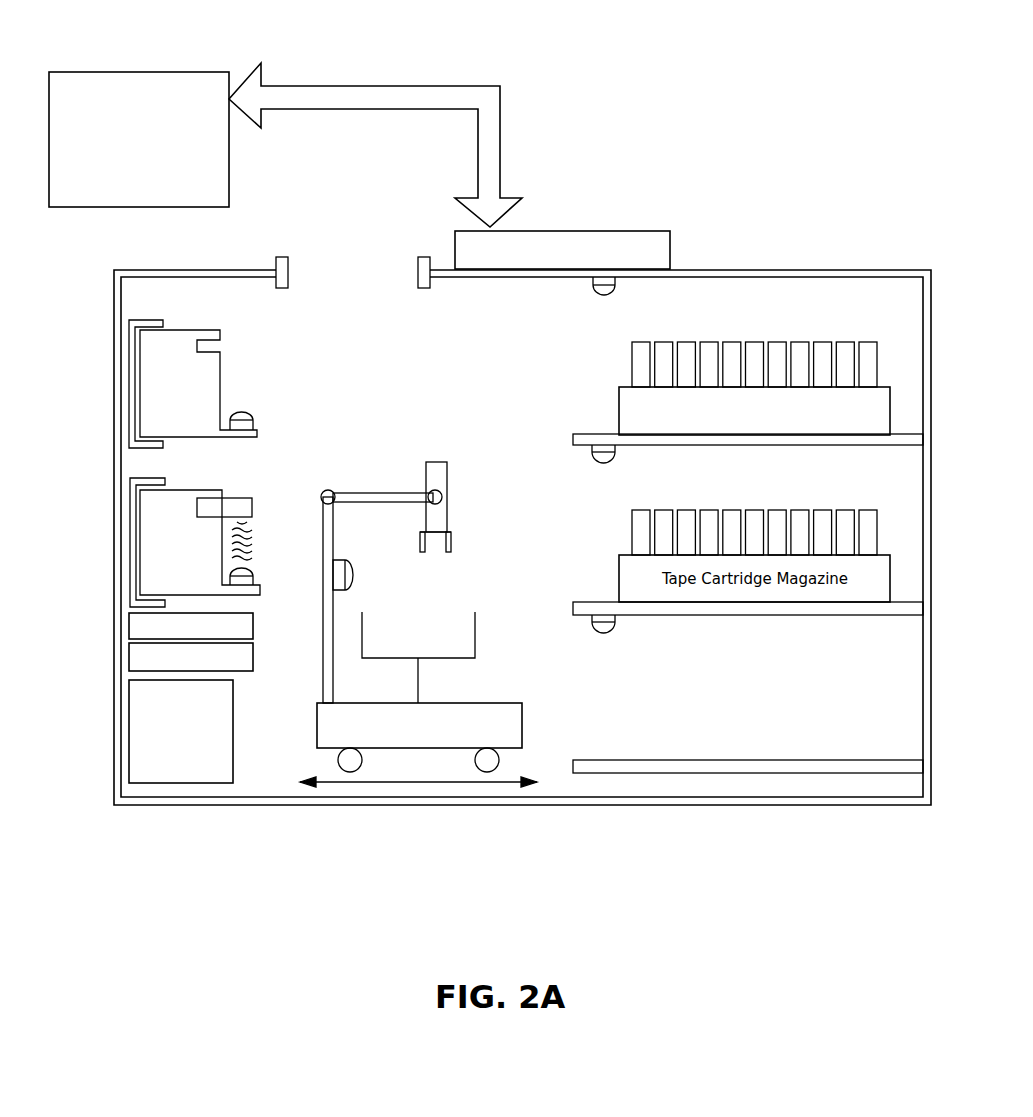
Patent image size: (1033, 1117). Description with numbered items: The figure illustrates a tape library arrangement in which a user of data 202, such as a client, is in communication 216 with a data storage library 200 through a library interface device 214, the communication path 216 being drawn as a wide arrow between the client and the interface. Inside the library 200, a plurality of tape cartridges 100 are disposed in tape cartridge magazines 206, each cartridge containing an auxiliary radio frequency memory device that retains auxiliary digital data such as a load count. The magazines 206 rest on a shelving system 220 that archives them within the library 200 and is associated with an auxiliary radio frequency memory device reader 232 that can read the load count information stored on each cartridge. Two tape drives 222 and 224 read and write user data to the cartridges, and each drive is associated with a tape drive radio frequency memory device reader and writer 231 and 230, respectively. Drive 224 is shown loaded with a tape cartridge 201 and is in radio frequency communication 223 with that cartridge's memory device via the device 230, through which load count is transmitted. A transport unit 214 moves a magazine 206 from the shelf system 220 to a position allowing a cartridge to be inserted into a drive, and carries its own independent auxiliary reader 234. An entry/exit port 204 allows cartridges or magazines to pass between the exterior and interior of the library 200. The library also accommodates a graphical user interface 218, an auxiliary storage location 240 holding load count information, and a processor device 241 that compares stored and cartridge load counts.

The tape cartridge 100 is at (714, 342).
The data storage library 200 is at (790, 215).
The tape cartridge 201 is at (232, 498).
The user of data 202 is at (140, 72).
The entry/exit port 204 is at (343, 240).
The tape cartridge magazine 206 is at (619, 423).
The library interface device 214 is at (542, 231).
The communication path 216 is at (500, 156).
The graphical user interface 218 is at (129, 762).
The shelving system 220 is at (573, 437).
The tape drive 222 is at (182, 330).
The radio frequency communication 223 is at (270, 557).
The tape drive 224 is at (175, 490).
The tape drive radio frequency memory device reader and writer 230 is at (253, 580).
The tape drive radio frequency memory device reader and writer 231 is at (255, 423).
The auxiliary radio frequency memory device reader 232 is at (590, 278).
The auxiliary radio frequency memory device reader 234 is at (337, 560).
The auxiliary storage location 240 is at (129, 662).
The processor device 241 is at (129, 617).